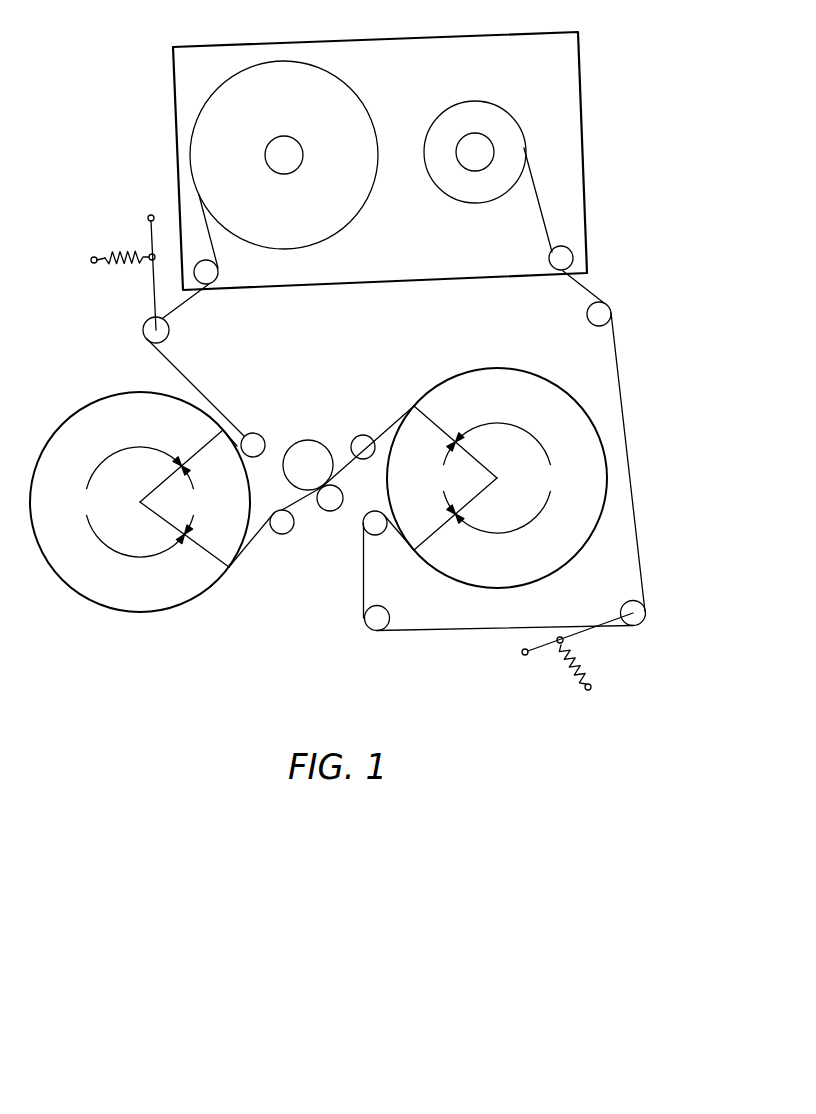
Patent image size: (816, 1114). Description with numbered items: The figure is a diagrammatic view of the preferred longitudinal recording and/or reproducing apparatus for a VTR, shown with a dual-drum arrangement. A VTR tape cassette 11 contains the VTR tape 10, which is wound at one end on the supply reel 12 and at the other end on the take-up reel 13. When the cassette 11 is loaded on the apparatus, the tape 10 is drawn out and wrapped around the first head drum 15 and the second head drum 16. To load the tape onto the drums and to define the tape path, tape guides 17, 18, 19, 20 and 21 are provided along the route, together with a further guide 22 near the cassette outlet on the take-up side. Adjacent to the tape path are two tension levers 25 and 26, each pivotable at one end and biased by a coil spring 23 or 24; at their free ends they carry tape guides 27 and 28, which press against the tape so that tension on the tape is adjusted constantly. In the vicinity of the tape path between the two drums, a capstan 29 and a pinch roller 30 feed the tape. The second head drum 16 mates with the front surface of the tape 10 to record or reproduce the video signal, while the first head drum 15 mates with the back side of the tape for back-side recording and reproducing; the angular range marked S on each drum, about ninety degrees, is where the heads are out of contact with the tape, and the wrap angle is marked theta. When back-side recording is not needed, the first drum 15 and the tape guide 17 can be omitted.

The VTR tape 10 is at (352, 217).
The VTR tape cassette 11 is at (378, 38).
The supply reel 12 is at (472, 130).
The take-up reel 13 is at (282, 137).
The first head drum 15 is at (197, 590).
The second head drum 16 is at (483, 368).
The tape guide 17 is at (260, 434).
The tape guide 18 is at (282, 535).
The tape guide 19 is at (360, 435).
The tape guide 20 is at (375, 536).
The tape guide 21 is at (376, 631).
The guide roller 22 is at (587, 316).
The coil spring 23 is at (115, 250).
The coil spring 24 is at (568, 667).
The tension lever 25 is at (152, 291).
The tension lever 26 is at (588, 631).
The tape guide 27 is at (170, 330).
The tape guide 28 is at (623, 602).
The capstan 29 is at (330, 510).
The pinch roller 30 is at (307, 441).